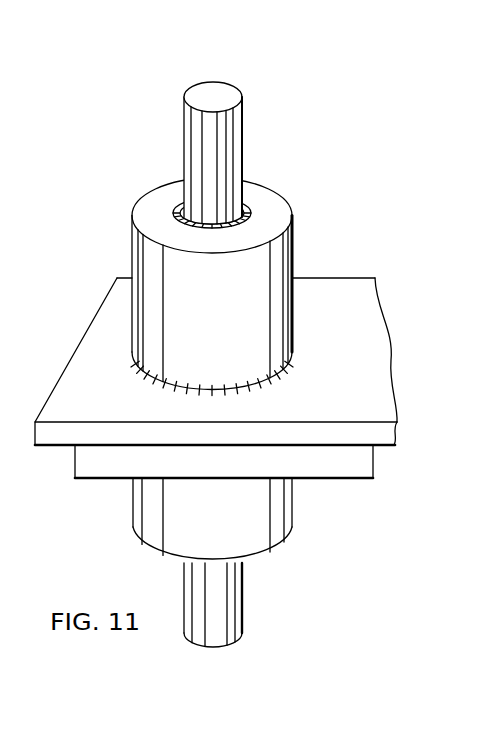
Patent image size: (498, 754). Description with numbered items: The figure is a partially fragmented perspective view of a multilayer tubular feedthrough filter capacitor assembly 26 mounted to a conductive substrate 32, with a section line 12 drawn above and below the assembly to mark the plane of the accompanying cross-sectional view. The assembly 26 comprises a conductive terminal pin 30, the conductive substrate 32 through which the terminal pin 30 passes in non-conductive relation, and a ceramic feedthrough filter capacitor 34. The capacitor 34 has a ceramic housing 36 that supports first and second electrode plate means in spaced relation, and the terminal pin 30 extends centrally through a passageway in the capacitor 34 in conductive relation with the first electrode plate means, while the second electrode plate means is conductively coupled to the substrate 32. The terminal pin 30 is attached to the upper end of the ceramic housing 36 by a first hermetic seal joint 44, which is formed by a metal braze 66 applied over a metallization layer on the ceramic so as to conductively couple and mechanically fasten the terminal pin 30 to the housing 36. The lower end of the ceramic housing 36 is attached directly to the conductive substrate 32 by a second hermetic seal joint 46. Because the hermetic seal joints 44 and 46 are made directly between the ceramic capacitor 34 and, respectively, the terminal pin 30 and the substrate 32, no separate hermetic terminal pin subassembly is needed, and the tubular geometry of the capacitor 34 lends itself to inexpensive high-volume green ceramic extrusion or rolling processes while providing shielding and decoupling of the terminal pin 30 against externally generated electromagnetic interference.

The section line 12- 12 is at (213, 68).
The feedthrough filter capacitor assembly 26 is at (90, 205).
The conductive terminal pin 30 is at (246, 602).
The conductive substrate 32 is at (372, 397).
The ceramic feedthrough filter capacitor 34 is at (293, 209).
The ceramic housing 36 is at (294, 262).
The first hermetic seal joint 44 is at (171, 198).
The second hermetic seal joint 46 is at (126, 351).
The metal braze 66 is at (245, 205).